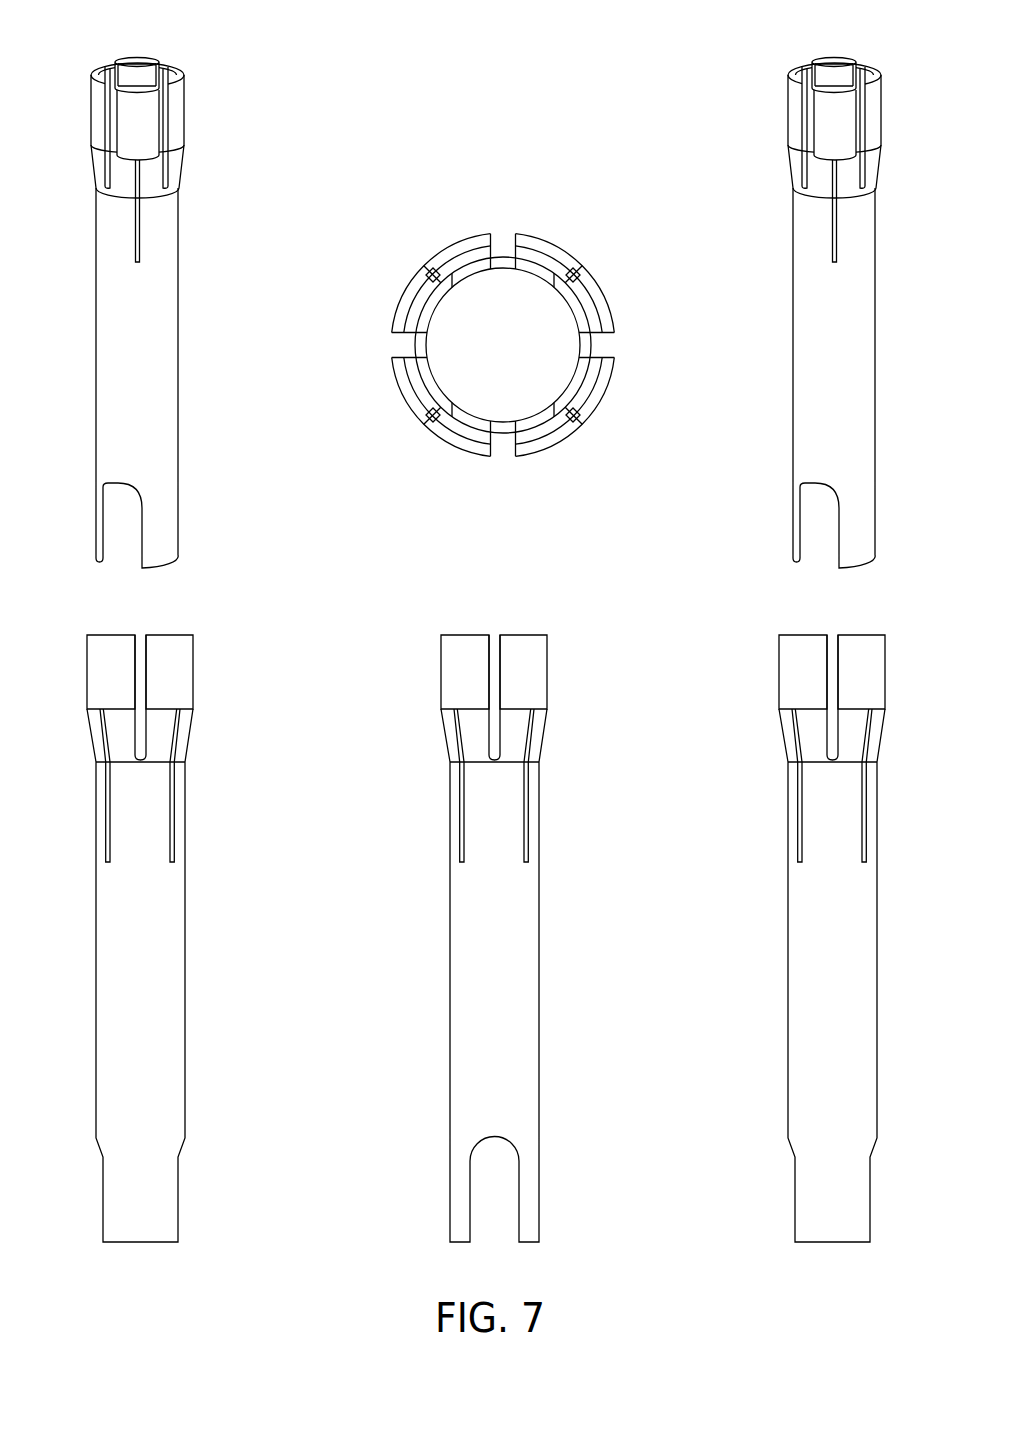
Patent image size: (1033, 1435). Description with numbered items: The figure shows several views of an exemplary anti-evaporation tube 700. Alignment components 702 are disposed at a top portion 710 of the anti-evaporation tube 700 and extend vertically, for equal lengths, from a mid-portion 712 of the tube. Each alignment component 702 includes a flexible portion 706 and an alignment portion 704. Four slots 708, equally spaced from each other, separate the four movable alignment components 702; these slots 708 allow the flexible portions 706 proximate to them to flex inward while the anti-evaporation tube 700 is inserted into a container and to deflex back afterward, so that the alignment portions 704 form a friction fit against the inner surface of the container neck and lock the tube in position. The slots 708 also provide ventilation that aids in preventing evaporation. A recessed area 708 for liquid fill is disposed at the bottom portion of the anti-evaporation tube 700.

The anti-evaporation tube 700 is at (138, 300).
The alignment components 702 is at (138, 138).
The alignment portion 704 is at (550, 242).
The flexible portion 706 is at (430, 270).
The slots 708 is at (396, 344).
The top portion 710 is at (142, 57).
The mid-portion 712 is at (815, 234).